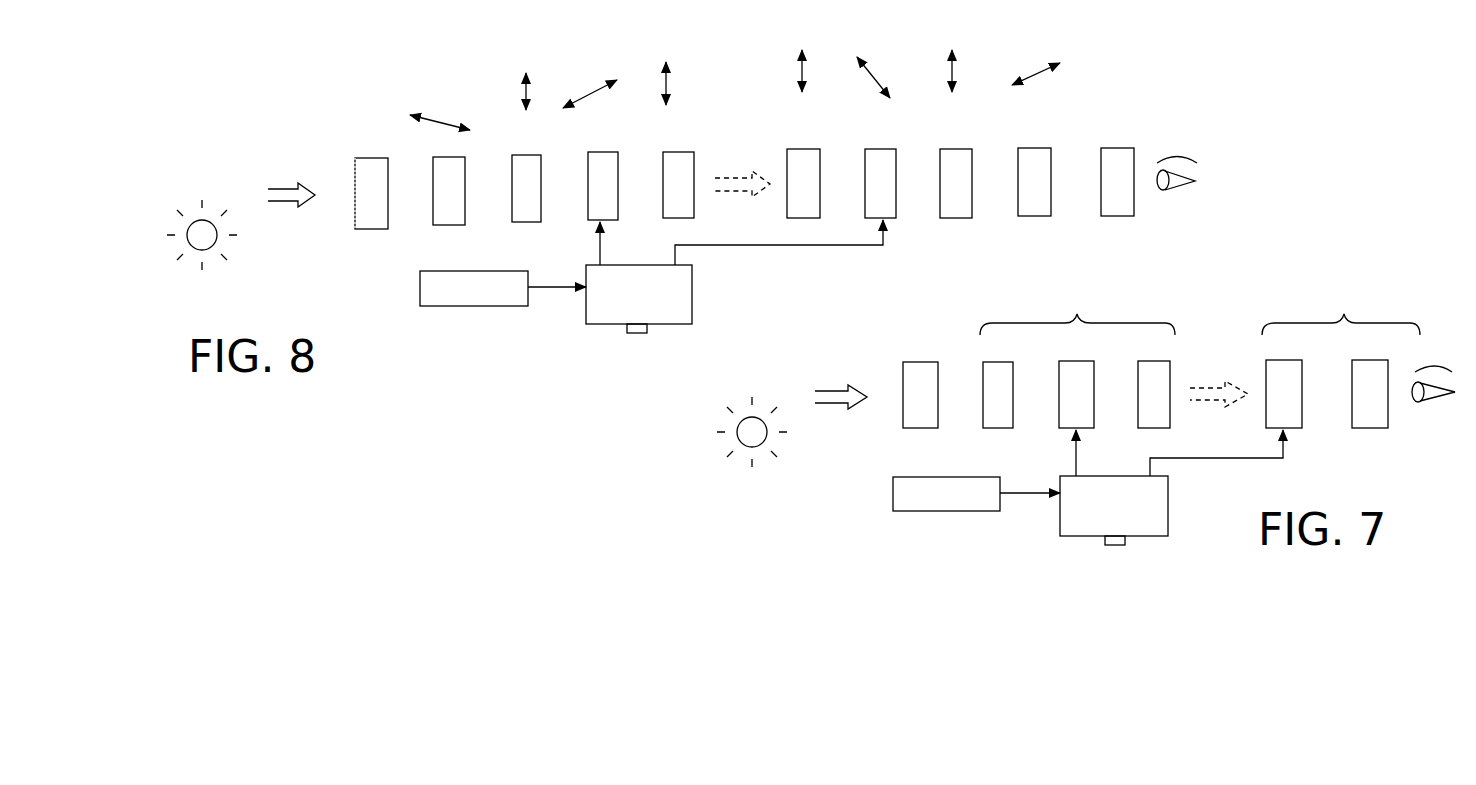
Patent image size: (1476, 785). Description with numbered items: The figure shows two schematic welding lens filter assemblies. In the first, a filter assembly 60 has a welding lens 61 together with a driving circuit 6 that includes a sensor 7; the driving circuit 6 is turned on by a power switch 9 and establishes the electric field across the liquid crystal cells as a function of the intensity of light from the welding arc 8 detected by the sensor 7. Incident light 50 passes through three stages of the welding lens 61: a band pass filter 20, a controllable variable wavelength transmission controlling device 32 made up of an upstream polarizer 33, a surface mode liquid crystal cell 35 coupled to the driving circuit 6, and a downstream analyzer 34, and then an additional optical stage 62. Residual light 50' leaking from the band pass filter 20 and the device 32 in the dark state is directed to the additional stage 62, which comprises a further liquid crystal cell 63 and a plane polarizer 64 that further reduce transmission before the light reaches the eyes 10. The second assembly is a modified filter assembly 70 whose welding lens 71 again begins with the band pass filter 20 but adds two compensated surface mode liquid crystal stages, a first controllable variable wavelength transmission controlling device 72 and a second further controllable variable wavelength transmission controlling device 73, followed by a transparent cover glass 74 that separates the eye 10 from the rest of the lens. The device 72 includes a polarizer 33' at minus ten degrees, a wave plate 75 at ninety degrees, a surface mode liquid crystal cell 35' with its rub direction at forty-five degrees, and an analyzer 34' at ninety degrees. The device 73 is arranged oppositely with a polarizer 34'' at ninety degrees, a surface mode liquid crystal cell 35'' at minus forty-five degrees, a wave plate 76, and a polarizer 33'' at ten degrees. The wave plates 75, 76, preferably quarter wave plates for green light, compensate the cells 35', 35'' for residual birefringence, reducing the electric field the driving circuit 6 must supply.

In FIG. 8, the driving circuit 6 is at (547, 304).
In FIG. 7, the driving circuit 6 is at (1047, 518).
In FIG. 8, the sensor 7 is at (420, 290).
In FIG. 7, the sensor 7 is at (925, 511).
In FIG. 8, the welding arc 8 is at (190, 225).
In FIG. 7, the welding arc 8 is at (748, 417).
In FIG. 8, the power switch 9 is at (632, 334).
In FIG. 7, the power switch 9 is at (1115, 545).
In FIG. 7, the eyes 10 is at (1428, 402).
In FIG. 8, the band pass filter 20 is at (366, 158).
In FIG. 7, the band pass filter 20 is at (922, 362).
In FIG. 7, the controllable variable wavelength transmission controlling device 32 is at (1077, 309).
In FIG. 7, the polarizer 33 is at (1001, 379).
In FIG. 7, the analyzer 34 is at (1153, 378).
In FIG. 7, the surface mode liquid crystal cell 35 is at (1083, 378).
In FIG. 8, the incident light 50 is at (276, 183).
In FIG. 7, the incident light 50 is at (836, 375).
In FIG. 8, the residual light 50' is at (741, 163).
In FIG. 7, the residual light 50' is at (1219, 372).
In FIG. 7, the filter assembly 60 is at (872, 463).
In FIG. 7, the welding lens 61 is at (893, 348).
In FIG. 7, the additional optical stage 62 is at (1341, 309).
In FIG. 7, the further liquid crystal cell 63 is at (1278, 360).
In FIG. 7, the plane polarizer 64 is at (1370, 360).
In FIG. 8, the filter assembly 70 is at (323, 263).
In FIG. 8, the welding lens 71 is at (310, 150).
In FIG. 8, the controllable variable wavelength transmission controlling device 72 is at (429, 54).
In FIG. 8, the further controllable variable wavelength transmission controlling device 73 is at (783, 100).
In FIG. 8, the transparent cover glass 74 is at (1137, 118).
In FIG. 8, the wave plate 75 is at (532, 136).
In FIG. 8, the wave plate 76 is at (970, 128).
In FIG. 8, the polarizer 33' is at (437, 156).
In FIG. 8, the surface mode liquid crystal cell 35' is at (589, 145).
In FIG. 8, the analyzer 34' is at (671, 123).
In FIG. 8, the polarizer 34'' is at (812, 118).
In FIG. 8, the surface mode liquid crystal cell 35'' is at (884, 135).
In FIG. 8, the polarizer 33'' is at (1034, 129).